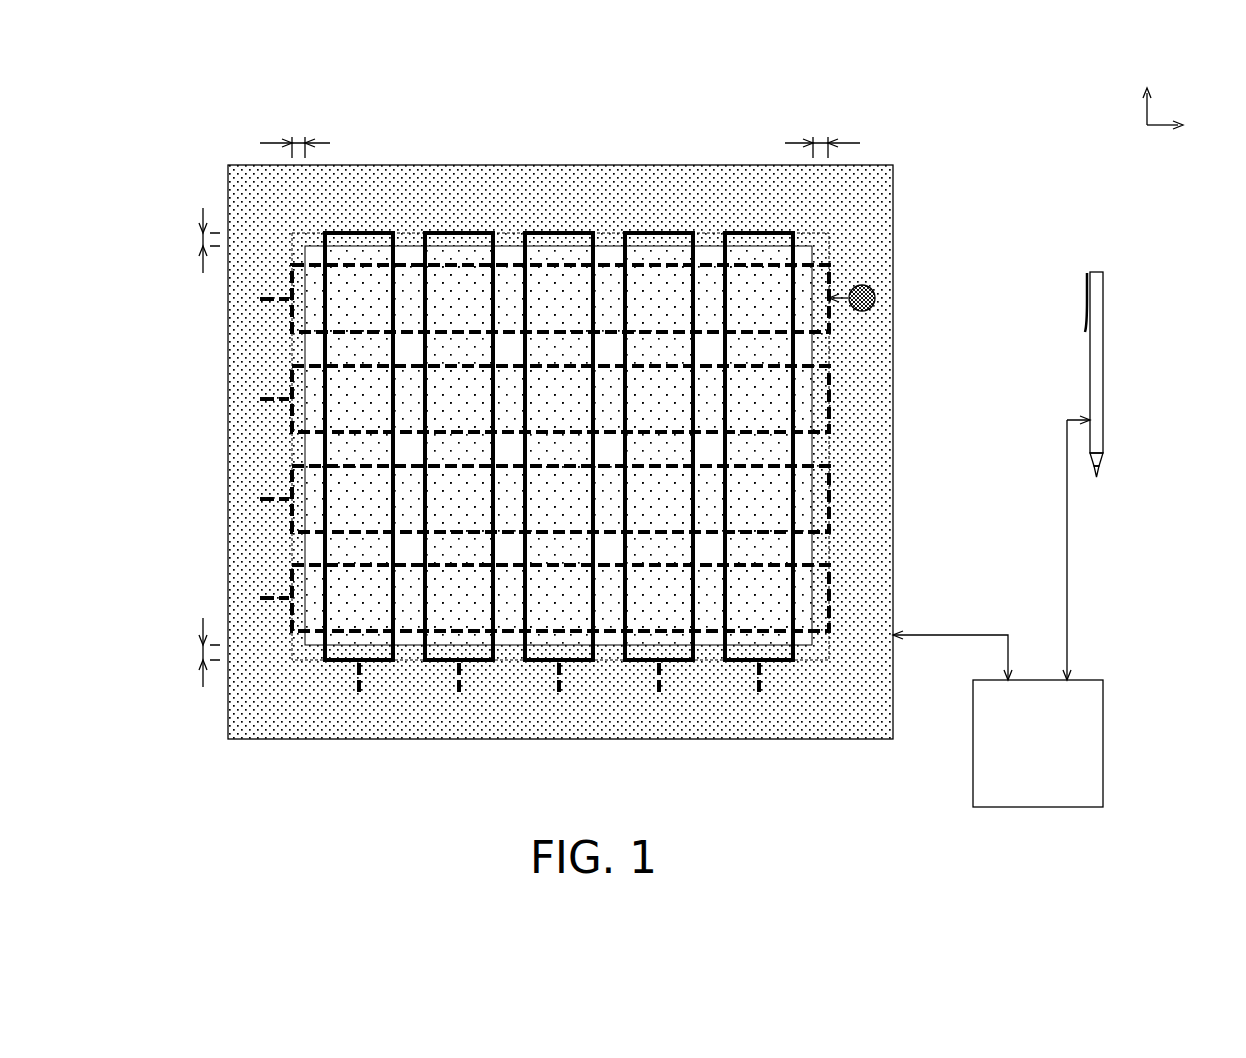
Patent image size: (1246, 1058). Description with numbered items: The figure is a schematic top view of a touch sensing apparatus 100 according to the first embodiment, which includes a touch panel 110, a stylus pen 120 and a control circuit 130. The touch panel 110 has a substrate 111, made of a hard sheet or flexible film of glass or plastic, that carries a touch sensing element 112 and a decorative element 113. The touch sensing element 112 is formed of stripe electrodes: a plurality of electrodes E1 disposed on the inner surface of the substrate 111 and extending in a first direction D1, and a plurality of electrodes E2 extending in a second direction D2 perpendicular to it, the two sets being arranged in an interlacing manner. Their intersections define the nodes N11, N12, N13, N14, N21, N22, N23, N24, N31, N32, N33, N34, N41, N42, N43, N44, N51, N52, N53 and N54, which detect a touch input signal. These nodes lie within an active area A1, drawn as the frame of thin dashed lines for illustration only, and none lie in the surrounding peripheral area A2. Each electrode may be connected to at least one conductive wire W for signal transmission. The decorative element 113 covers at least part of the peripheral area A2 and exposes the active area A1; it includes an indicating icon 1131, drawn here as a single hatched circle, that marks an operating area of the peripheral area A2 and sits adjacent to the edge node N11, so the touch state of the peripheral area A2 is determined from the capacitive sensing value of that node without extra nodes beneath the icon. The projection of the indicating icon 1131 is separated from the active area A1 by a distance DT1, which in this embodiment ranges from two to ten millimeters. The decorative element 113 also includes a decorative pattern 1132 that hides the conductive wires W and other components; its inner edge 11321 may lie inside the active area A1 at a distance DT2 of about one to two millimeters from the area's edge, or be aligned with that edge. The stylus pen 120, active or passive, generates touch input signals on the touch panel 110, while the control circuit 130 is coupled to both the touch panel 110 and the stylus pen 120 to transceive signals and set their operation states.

The touch sensing apparatus 100 is at (1203, 812).
The touch panel 110 is at (928, 190).
The substrate 111 is at (298, 740).
The touch sensing element 112 is at (545, 790).
The decorative element 113 is at (972, 217).
The indicating icon 1131 is at (873, 292).
The decorative pattern 1132 is at (870, 230).
The inner edge of the decorative pattern 11321 is at (812, 547).
The stylus pen 120 is at (1100, 338).
The control circuit 130 is at (1062, 760).
The active area A1 is at (305, 235).
The peripheral area A2 is at (262, 205).
The distance DT1 is at (838, 302).
The distance DT2 is at (521, 408).
The electrodes E1 is at (829, 331).
The electrodes E2 is at (375, 232).
The conductive wires W is at (760, 677).
The first direction D1 is at (1178, 127).
The second direction D2 is at (1148, 94).
The node N11 is at (759, 299).
The node N12 is at (759, 399).
The node N13 is at (759, 499).
The node N14 is at (759, 598).
The node N21 is at (659, 299).
The node N22 is at (659, 399).
The node N23 is at (659, 499).
The node N24 is at (659, 598).
The node N31 is at (559, 299).
The node N32 is at (559, 399).
The node N33 is at (559, 499).
The node N34 is at (559, 598).
The node N41 is at (459, 299).
The node N42 is at (459, 399).
The node N43 is at (459, 499).
The node N44 is at (459, 598).
The node N51 is at (359, 299).
The node N52 is at (359, 399).
The node N53 is at (359, 499).
The node N54 is at (359, 598).